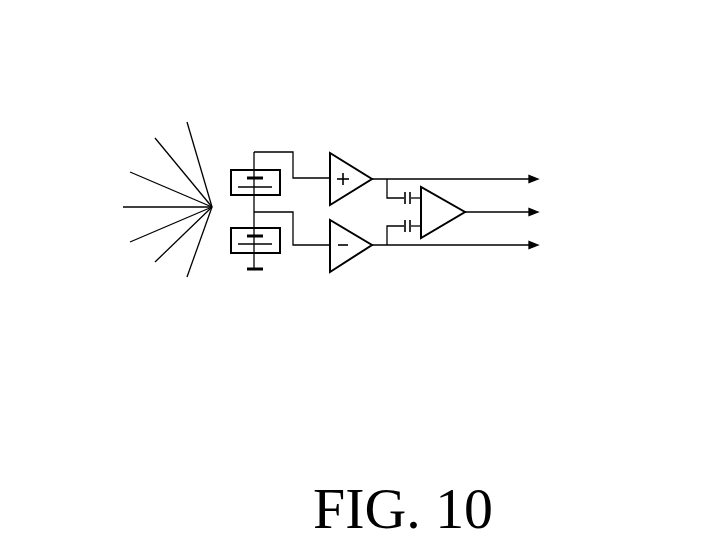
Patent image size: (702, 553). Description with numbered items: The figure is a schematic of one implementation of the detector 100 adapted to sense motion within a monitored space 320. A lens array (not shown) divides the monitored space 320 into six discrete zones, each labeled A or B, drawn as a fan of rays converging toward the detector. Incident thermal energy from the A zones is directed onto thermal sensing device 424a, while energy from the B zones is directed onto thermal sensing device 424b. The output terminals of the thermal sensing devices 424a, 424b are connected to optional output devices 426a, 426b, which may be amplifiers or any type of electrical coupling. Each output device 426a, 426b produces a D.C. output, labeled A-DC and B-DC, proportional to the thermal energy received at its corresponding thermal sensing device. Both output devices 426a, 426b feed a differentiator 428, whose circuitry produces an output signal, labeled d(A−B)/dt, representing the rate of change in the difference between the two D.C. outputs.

The detector 100 is at (525, 92).
The monitored space 320 is at (112, 190).
The thermal sensing device 424a is at (238, 138).
The thermal sensing device 424b is at (225, 282).
The output device 426a is at (353, 150).
The output device 426b is at (352, 272).
The differentiator 428 is at (453, 225).